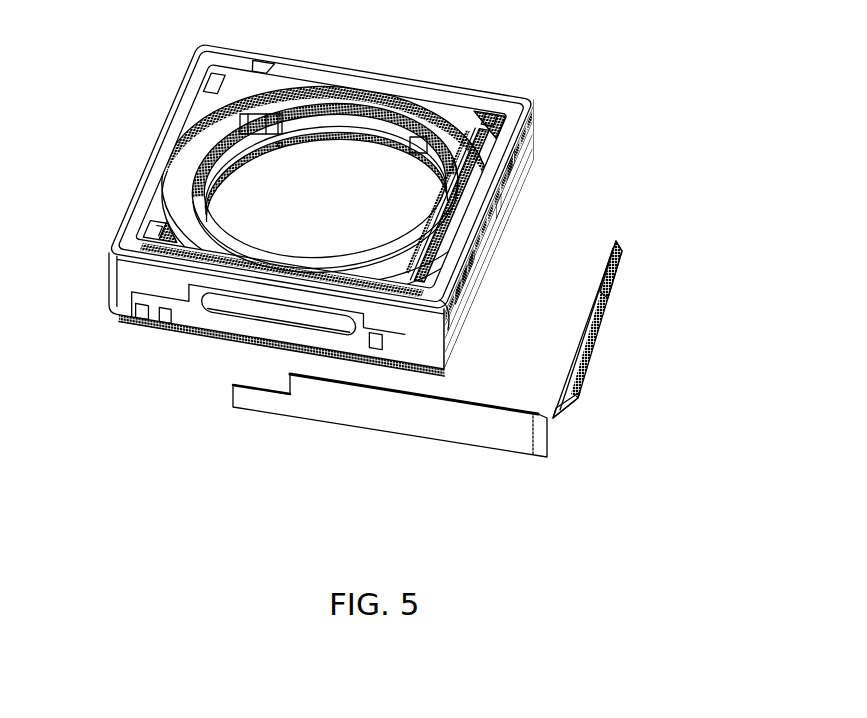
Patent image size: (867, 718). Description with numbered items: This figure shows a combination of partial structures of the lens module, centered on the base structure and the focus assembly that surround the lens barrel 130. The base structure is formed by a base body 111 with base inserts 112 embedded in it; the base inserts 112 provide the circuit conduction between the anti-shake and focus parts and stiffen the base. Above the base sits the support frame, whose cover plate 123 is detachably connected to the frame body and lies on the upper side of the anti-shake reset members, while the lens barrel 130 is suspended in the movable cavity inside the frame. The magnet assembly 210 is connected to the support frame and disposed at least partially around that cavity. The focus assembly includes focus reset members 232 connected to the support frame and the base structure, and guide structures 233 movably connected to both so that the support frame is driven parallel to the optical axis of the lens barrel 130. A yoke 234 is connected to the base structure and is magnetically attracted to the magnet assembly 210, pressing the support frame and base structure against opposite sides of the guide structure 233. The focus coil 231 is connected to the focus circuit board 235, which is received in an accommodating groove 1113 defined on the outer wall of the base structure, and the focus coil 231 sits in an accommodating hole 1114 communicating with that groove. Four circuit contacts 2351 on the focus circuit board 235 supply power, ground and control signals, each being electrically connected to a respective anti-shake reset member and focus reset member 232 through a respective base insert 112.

The base body 111 is at (204, 46).
The base inserts 112 is at (524, 182).
The cover plate 123 is at (298, 80).
The lens barrel 130 is at (374, 126).
The magnet assembly 210 is at (480, 196).
The focus coil 231 is at (580, 350).
The focus reset member 232 is at (213, 87).
The guide structure 233 is at (521, 103).
The yoke 234 is at (613, 289).
The focus circuit board 235 is at (438, 427).
The accommodating groove 1113 is at (523, 156).
The accommodating hole 1114 is at (480, 265).
The circuit contacts 2351 is at (580, 394).